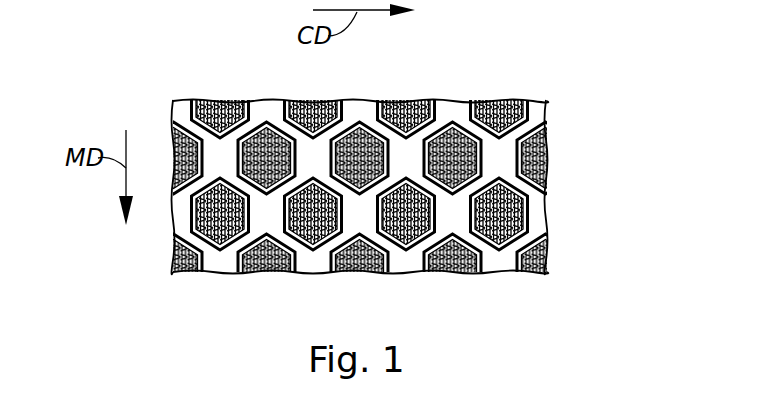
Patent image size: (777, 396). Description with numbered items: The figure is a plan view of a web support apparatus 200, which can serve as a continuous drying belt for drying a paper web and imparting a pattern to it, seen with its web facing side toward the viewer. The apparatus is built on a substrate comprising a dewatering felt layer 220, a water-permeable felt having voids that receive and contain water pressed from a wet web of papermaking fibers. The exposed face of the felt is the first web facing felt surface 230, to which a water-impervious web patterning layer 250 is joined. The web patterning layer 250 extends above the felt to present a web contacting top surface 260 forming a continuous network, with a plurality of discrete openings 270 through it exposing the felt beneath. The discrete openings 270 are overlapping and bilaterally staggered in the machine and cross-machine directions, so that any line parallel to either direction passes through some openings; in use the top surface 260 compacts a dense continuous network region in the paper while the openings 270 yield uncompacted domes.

The web support apparatus 200 is at (150, 91).
The dewatering felt layer 220 is at (495, 100).
The first web facing felt surface 230 is at (222, 100).
The web patterning layer 250 is at (575, 236).
The web contacting top surface 260 is at (537, 208).
The discrete openings 270 is at (318, 252).